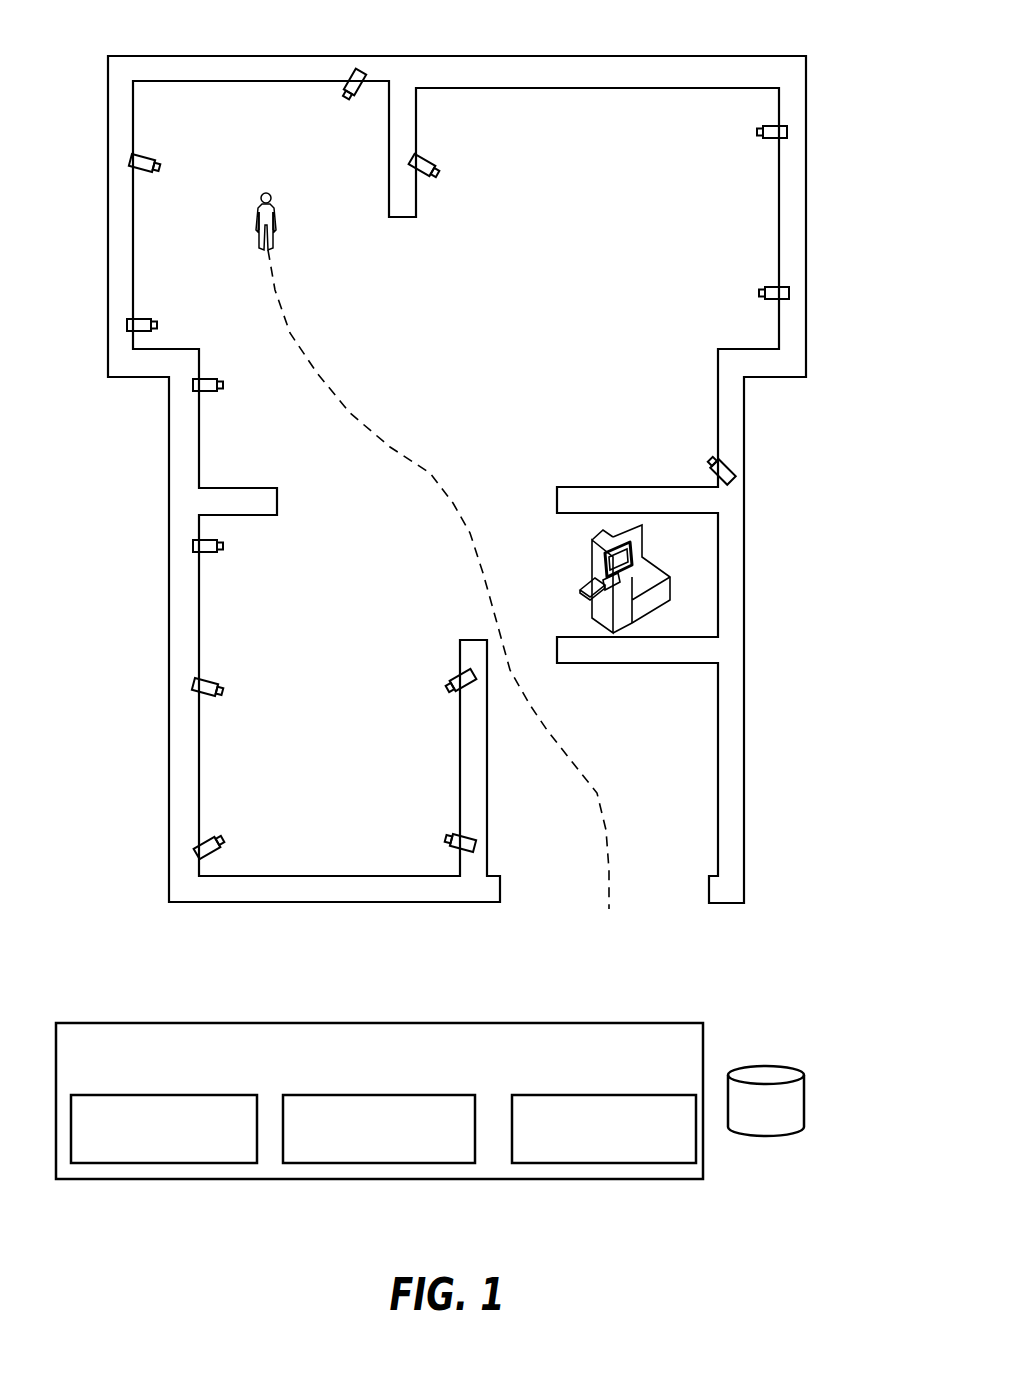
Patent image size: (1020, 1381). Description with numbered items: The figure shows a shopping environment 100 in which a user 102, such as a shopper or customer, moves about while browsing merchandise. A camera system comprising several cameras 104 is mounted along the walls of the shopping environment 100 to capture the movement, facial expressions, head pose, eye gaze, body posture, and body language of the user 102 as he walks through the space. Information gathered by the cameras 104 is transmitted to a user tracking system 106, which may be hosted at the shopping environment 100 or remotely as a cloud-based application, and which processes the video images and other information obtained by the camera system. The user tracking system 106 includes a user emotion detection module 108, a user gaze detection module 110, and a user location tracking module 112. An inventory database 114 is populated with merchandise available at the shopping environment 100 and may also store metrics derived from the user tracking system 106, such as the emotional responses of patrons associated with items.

The shopping environment 100 is at (663, 47).
The user 102 is at (272, 210).
The cameras 104 is at (424, 158).
The user tracking system 106 is at (397, 1023).
The user emotion detection module 108 is at (173, 1095).
The user gaze detection module 110 is at (402, 1095).
The user location tracking module 112 is at (613, 1095).
The inventory database 114 is at (763, 1070).